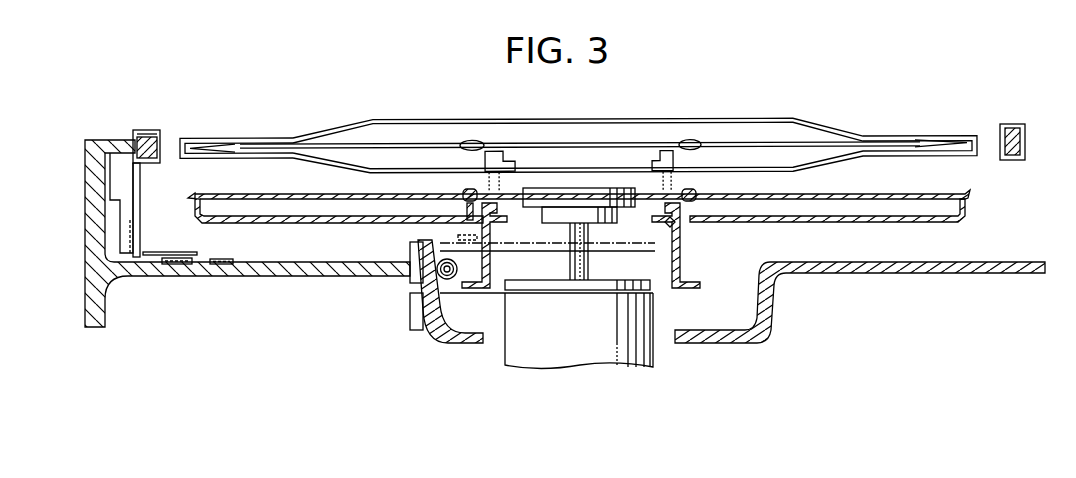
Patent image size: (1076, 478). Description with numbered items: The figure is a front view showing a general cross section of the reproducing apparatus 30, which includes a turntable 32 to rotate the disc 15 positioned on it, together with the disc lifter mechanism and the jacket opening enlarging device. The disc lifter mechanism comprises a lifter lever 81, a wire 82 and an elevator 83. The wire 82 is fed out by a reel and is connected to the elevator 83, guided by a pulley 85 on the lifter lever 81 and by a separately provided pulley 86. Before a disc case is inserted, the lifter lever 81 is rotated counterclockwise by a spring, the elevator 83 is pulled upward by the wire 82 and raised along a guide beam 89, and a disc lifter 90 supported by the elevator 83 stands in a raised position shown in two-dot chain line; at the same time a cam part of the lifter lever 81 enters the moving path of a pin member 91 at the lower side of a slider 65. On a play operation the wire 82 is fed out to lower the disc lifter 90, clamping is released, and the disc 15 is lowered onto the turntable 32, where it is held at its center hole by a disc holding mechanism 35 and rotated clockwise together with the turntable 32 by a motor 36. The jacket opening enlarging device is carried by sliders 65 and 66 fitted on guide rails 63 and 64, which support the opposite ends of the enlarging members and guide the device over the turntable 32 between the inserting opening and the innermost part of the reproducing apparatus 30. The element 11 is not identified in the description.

The fluorescent lamp 11 is at (455, 115).
The disc 15 is at (390, 140).
The reproducing apparatus 30 is at (775, 102).
The turntable 32 is at (867, 220).
The disc holding mechanism 35 is at (574, 189).
The motor 36 is at (584, 367).
The guide rail 63 is at (134, 139).
The guide rail 64 is at (1027, 140).
The slider 65 is at (160, 131).
The slider 66 is at (1011, 125).
The lifter lever 81 is at (182, 254).
The wire 82 is at (329, 261).
The elevator 83 is at (602, 252).
The pulley 85 is at (213, 266).
The pulley 86 is at (458, 269).
The guide beam 89 is at (412, 250).
The disc lifter 90 is at (686, 189).
The pin member 91 is at (143, 238).